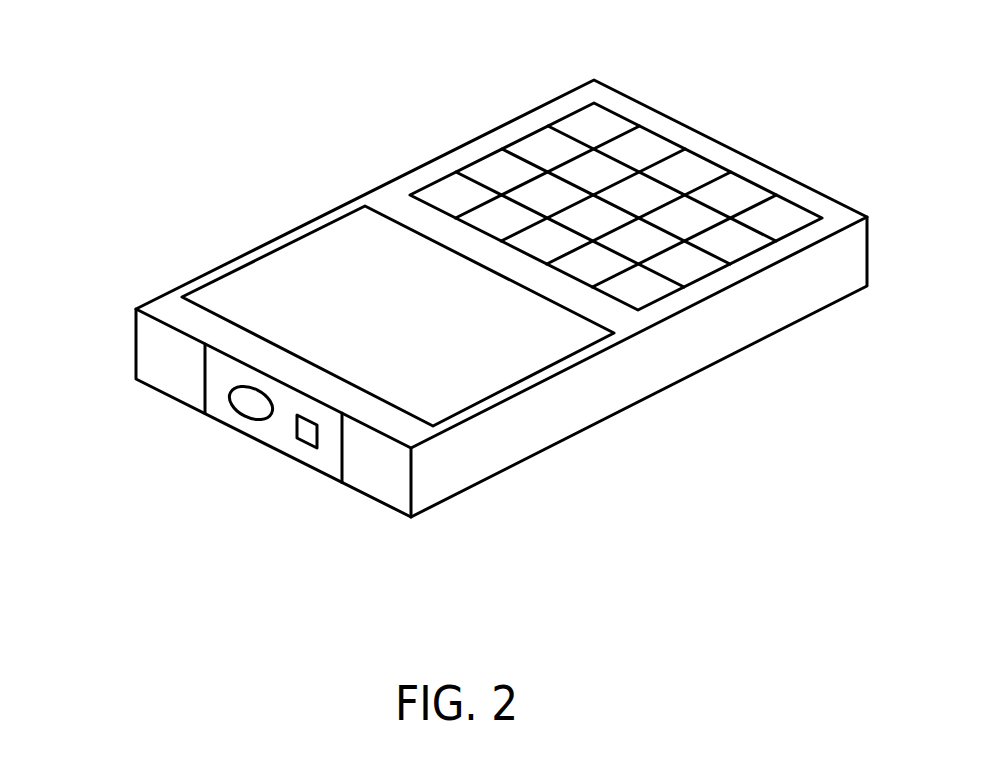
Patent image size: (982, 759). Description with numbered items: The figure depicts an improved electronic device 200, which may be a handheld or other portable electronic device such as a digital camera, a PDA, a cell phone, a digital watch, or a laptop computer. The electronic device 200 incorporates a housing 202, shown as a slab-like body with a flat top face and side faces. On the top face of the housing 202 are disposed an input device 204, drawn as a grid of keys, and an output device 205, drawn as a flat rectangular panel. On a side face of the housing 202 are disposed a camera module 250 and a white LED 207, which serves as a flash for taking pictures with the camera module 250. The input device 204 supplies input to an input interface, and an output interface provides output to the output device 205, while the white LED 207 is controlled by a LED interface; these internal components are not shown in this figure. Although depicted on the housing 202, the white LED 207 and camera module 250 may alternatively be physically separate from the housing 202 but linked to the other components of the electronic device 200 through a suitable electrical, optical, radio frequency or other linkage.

The electronic device 200 is at (168, 70).
The housing 202 is at (640, 368).
The input device 204 is at (640, 148).
The output device 205 is at (252, 297).
The camera module 250 is at (251, 403).
The white LED 207 is at (307, 433).